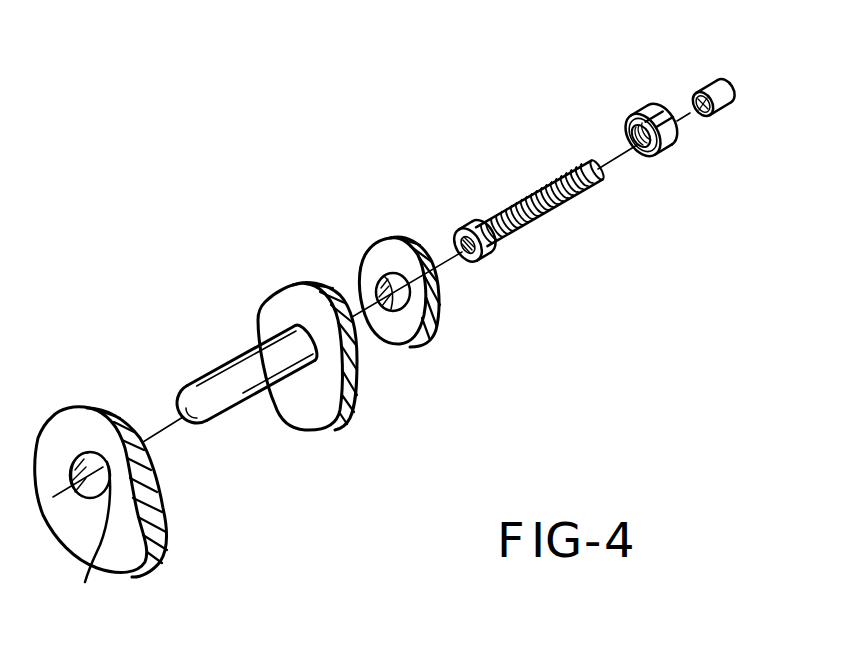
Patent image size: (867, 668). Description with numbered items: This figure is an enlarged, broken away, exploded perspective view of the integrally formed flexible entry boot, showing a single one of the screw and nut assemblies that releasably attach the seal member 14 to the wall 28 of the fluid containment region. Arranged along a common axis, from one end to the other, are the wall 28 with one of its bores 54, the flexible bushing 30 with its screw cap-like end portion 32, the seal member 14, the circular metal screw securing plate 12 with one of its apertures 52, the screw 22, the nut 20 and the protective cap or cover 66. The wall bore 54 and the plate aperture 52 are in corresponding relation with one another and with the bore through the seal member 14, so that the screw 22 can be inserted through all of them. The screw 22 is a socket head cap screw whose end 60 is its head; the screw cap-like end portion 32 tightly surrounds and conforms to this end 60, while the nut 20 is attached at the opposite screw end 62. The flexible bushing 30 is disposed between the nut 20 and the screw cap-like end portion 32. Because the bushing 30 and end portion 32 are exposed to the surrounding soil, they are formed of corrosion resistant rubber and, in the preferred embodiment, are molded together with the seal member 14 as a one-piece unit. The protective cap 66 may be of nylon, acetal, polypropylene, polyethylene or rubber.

The screw securing plate 12 is at (402, 288).
The seal member 14 is at (293, 285).
The nut 20 is at (663, 157).
The screw 22 is at (545, 213).
The wall 28 is at (166, 540).
The flexible bushing 30 is at (225, 399).
The screw cap-like end portion 32 is at (186, 392).
The aperture 52 is at (378, 282).
The bore 54 is at (85, 582).
The end 60 is at (484, 256).
The screw end 62 is at (597, 165).
The protective cap 66 is at (714, 84).